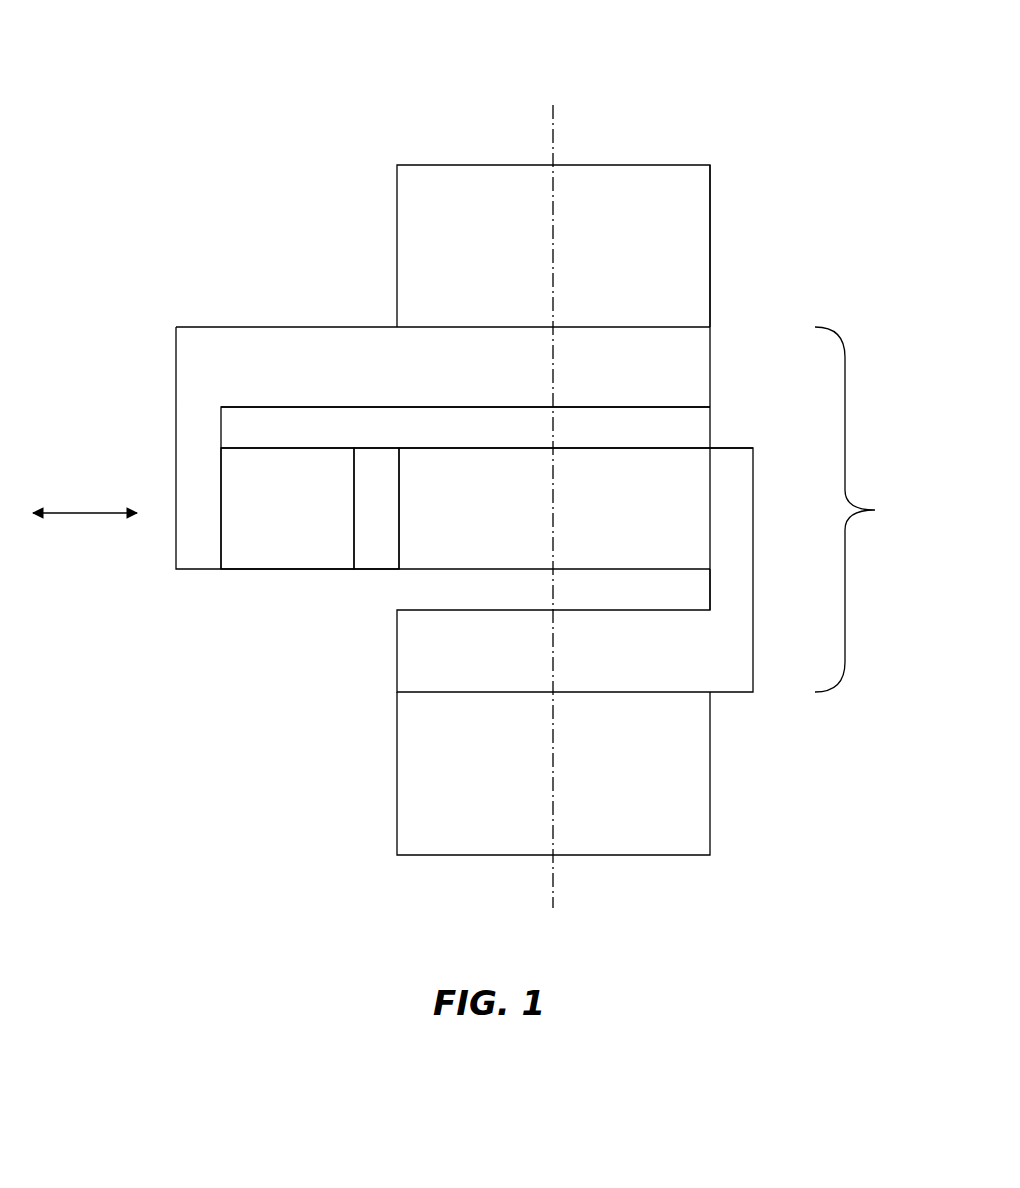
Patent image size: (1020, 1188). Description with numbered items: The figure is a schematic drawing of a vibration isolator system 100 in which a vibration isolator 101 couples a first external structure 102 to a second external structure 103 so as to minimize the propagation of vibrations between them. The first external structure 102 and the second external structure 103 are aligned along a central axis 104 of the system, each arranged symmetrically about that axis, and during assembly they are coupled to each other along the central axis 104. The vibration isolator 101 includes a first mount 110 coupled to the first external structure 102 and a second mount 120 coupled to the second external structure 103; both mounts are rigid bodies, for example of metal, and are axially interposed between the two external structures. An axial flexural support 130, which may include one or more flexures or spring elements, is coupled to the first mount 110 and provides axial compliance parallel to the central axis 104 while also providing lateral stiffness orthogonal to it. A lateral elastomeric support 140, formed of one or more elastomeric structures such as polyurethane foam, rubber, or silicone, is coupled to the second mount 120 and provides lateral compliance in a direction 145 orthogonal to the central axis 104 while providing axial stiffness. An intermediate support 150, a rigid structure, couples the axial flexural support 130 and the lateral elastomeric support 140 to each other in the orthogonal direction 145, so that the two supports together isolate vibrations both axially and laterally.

The vibration isolator system 100 is at (296, 58).
The vibration isolator 101 is at (869, 509).
The first external structure 102 is at (710, 785).
The second external structure 103 is at (710, 240).
The central axis 104 is at (552, 125).
The first mount 110 is at (397, 670).
The second mount 120 is at (176, 367).
The axial flexural support 130 is at (675, 445).
The lateral elastomeric support 140 is at (277, 570).
The direction 145 is at (88, 515).
The intermediate support 150 is at (377, 572).